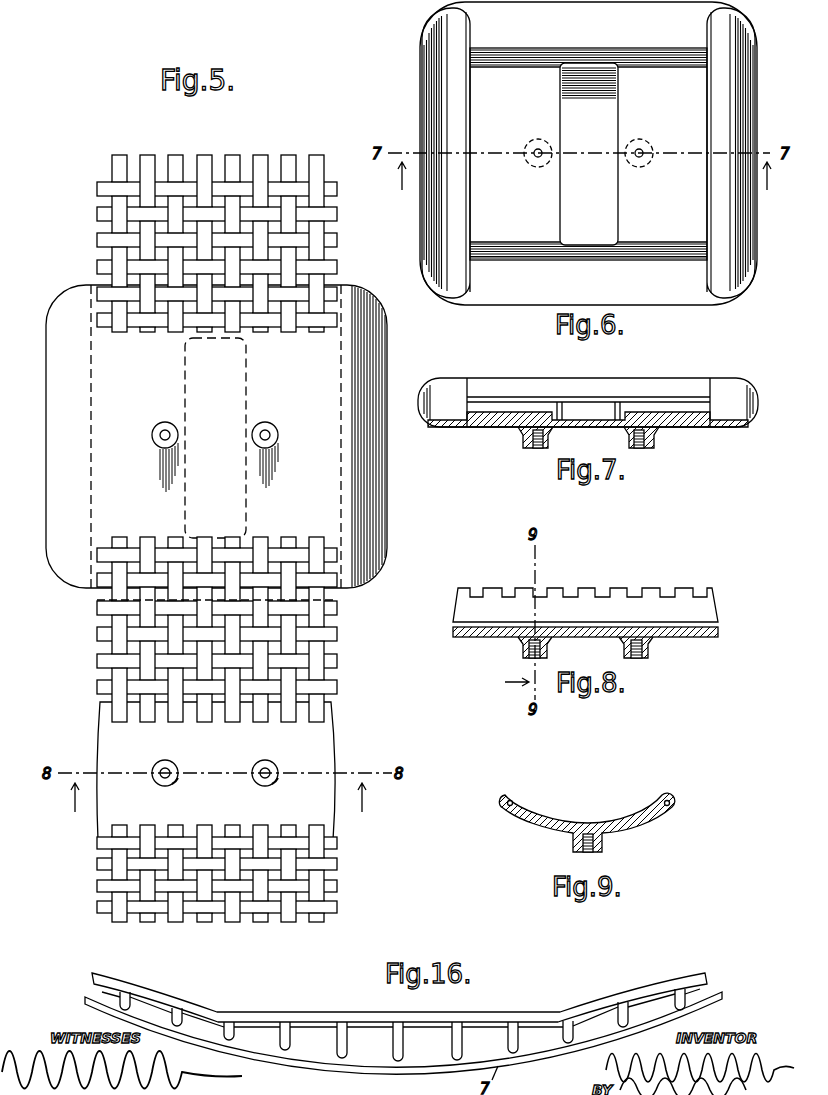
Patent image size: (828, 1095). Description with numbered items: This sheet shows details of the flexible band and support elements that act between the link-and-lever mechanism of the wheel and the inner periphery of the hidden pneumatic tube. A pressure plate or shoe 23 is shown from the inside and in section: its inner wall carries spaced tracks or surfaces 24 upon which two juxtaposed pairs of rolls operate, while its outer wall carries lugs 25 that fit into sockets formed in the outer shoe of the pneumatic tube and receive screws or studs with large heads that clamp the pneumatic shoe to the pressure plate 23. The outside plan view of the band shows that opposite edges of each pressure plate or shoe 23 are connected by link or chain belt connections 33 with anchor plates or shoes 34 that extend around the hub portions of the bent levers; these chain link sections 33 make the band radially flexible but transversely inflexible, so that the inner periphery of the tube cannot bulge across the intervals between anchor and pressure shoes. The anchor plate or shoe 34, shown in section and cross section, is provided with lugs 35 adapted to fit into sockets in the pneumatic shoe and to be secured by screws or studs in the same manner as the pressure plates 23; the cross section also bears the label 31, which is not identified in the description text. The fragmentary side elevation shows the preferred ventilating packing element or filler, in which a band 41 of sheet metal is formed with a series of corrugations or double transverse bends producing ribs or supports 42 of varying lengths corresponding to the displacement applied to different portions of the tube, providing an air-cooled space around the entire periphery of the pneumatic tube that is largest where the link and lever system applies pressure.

In FIG. 5, the pressure plate or shoe 23 is at (62, 480).
In FIG. 6, the pressure plate or shoe 23 is at (585, 0).
In FIG. 7, the pressure plate or shoe 23 is at (722, 390).
In FIG. 6, the spaced tracks or surfaces 24 is at (588, 154).
In FIG. 7, the spaced tracks or surfaces 24 is at (500, 413).
In FIG. 5, the lugs 25 is at (160, 446).
In FIG. 6, the lugs 25 is at (534, 138).
In FIG. 7, the lugs 25 is at (525, 440).
In FIG. 9, the web 31 is at (550, 823).
In FIG. 5, the link or chain belt connections 33 is at (108, 247).
In FIG. 5, the anchor plate or shoe 34 is at (312, 750).
In FIG. 8, the anchor plate or shoe 34 is at (703, 613).
In FIG. 9, the anchor plate or shoe 34 is at (562, 818).
In FIG. 5, the lugs 35 is at (168, 780).
In FIG. 8, the lugs 35 is at (520, 652).
In FIG. 9, the lugs 35 is at (602, 848).
In FIG. 16, the band 41 is at (432, 1036).
In FIG. 16, the ribs or supports 42 is at (392, 1054).